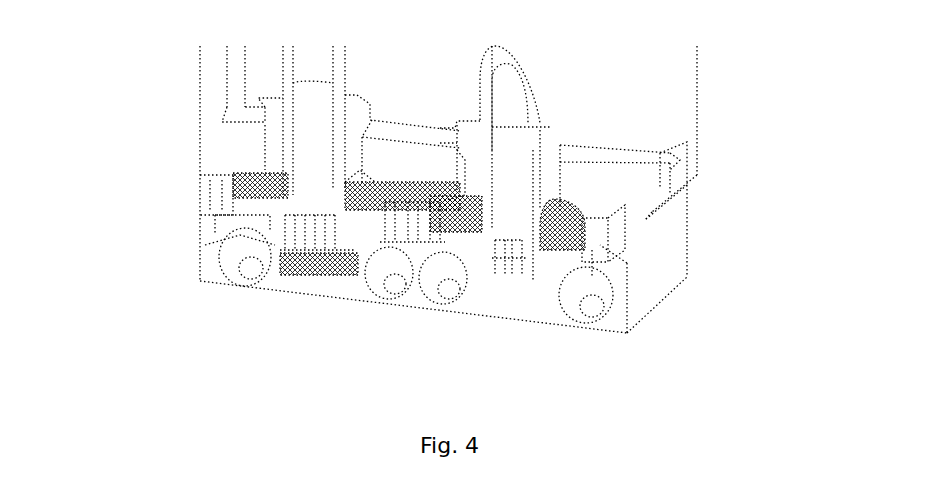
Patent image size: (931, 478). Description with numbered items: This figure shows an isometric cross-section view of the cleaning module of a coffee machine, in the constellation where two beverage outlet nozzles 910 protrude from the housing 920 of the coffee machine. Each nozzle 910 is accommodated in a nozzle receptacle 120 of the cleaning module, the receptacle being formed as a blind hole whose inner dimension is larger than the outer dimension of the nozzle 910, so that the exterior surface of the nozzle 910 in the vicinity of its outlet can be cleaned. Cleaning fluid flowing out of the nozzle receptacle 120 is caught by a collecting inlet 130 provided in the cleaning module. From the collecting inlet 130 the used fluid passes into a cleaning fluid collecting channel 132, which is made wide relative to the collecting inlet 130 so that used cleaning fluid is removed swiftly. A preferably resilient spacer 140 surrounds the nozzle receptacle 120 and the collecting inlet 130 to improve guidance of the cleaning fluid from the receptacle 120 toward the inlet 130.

The beverage outlet nozzle 910 is at (313, 95).
The housing 920 is at (212, 118).
The spacer 140 is at (240, 195).
The collecting inlet 130 is at (380, 228).
The nozzle receptacle 120 is at (292, 247).
The cleaning fluid collecting channel 132 is at (257, 263).